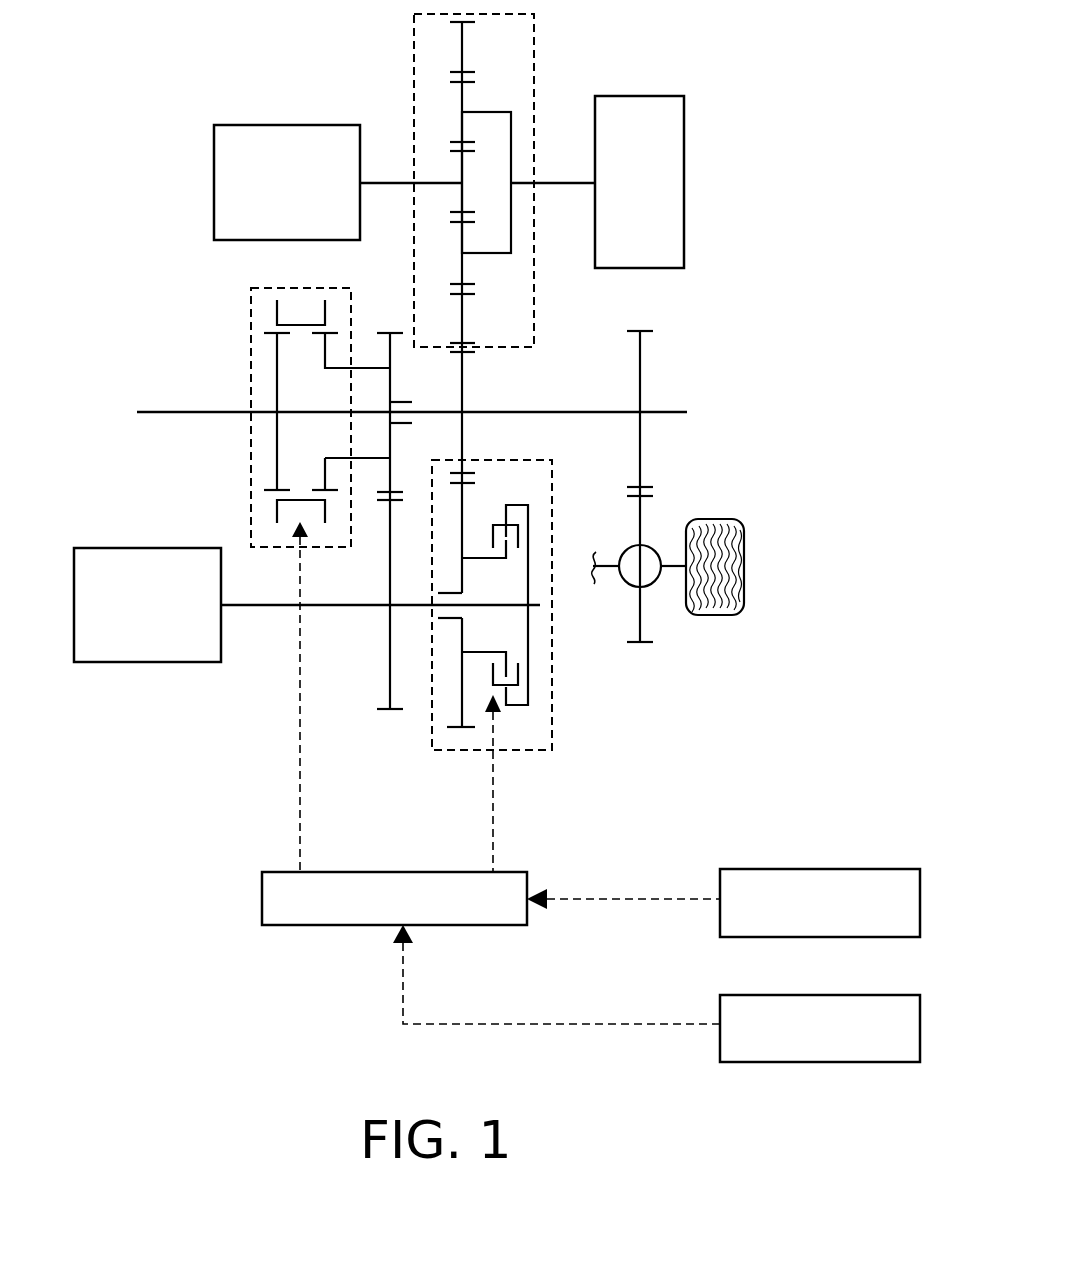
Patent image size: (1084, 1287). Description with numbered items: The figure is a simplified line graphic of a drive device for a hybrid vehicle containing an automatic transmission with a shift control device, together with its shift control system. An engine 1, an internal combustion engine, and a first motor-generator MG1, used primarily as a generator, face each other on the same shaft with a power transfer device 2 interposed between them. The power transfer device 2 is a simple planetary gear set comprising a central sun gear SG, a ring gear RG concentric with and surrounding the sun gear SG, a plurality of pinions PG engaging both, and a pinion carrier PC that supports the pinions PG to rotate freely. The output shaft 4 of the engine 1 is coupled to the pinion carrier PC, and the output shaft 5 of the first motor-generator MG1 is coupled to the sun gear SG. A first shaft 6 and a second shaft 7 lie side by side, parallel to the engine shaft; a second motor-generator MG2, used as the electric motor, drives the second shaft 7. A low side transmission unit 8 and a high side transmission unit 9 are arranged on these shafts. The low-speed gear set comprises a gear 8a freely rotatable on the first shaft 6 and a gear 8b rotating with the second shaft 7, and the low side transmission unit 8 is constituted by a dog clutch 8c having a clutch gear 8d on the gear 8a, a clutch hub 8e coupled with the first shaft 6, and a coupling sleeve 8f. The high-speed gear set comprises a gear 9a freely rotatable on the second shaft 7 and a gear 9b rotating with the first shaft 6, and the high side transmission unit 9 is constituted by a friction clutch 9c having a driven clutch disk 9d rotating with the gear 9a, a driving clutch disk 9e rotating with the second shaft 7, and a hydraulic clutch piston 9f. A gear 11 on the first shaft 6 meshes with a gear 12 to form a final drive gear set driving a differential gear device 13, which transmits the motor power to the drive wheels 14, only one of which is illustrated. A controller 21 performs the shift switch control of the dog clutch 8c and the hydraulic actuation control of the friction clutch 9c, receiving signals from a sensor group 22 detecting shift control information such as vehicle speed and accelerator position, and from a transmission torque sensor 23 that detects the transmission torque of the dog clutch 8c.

The engine 1 is at (662, 96).
The power transfer device 2 is at (476, 300).
The output shaft 4 is at (564, 182).
The output shaft 5 is at (393, 186).
The first shaft 6 is at (676, 408).
The second shaft 7 is at (252, 607).
The low side transmission unit 8 is at (282, 562).
The gear 8a is at (393, 490).
The gear 8b is at (383, 712).
The dog clutch 8c is at (265, 324).
The clutch gear 8d is at (325, 347).
The clutch hub 8e is at (276, 340).
The coupling sleeve 8f is at (277, 302).
The high side transmission unit 9 is at (529, 644).
The gear 9a is at (462, 730).
The gear 9b is at (470, 470).
The friction clutch 9c is at (493, 520).
The driven clutch disk 9d is at (508, 552).
The driving clutch disk 9e is at (532, 507).
The hydraulic clutch piston 9f is at (521, 528).
The gear 11 is at (645, 330).
The gear 12 is at (645, 645).
The differential gear device 13 is at (628, 585).
The drive wheels 14 is at (726, 519).
The controller 21 is at (518, 872).
The sensor group 22 is at (858, 869).
The transmission torque sensor 23 is at (858, 995).
The first motor-generator MG1 is at (249, 124).
The second motor-generator MG2 is at (115, 547).
The pinions PG is at (460, 92).
The sun gear SG is at (460, 160).
The pinion carrier PC is at (498, 112).
The ring gear RG is at (468, 346).